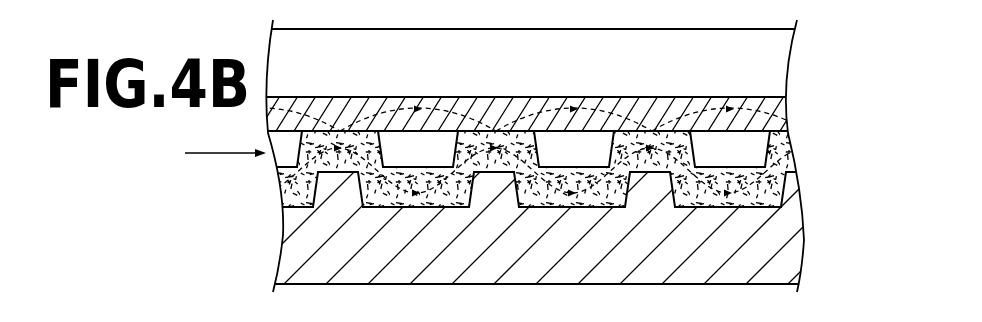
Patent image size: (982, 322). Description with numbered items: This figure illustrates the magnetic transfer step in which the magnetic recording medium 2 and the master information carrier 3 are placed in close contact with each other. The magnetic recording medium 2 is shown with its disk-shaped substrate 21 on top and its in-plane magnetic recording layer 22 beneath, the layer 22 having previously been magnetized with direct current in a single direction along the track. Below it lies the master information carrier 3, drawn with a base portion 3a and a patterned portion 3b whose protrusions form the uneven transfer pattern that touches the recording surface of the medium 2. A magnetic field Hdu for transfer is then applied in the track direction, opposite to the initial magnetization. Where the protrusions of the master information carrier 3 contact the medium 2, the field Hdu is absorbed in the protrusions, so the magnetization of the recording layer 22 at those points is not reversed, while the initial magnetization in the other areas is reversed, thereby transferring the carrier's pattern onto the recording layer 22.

The magnetic recording medium 2 is at (531, 74).
The substrate 21 is at (782, 62).
The in-plane magnetic recording layer 22 is at (514, 110).
The master information carrier 3 is at (591, 207).
The substrate 3a is at (793, 257).
The magnetic recording layer 3b is at (793, 160).
The magnetic field for transfer Hdu is at (225, 166).